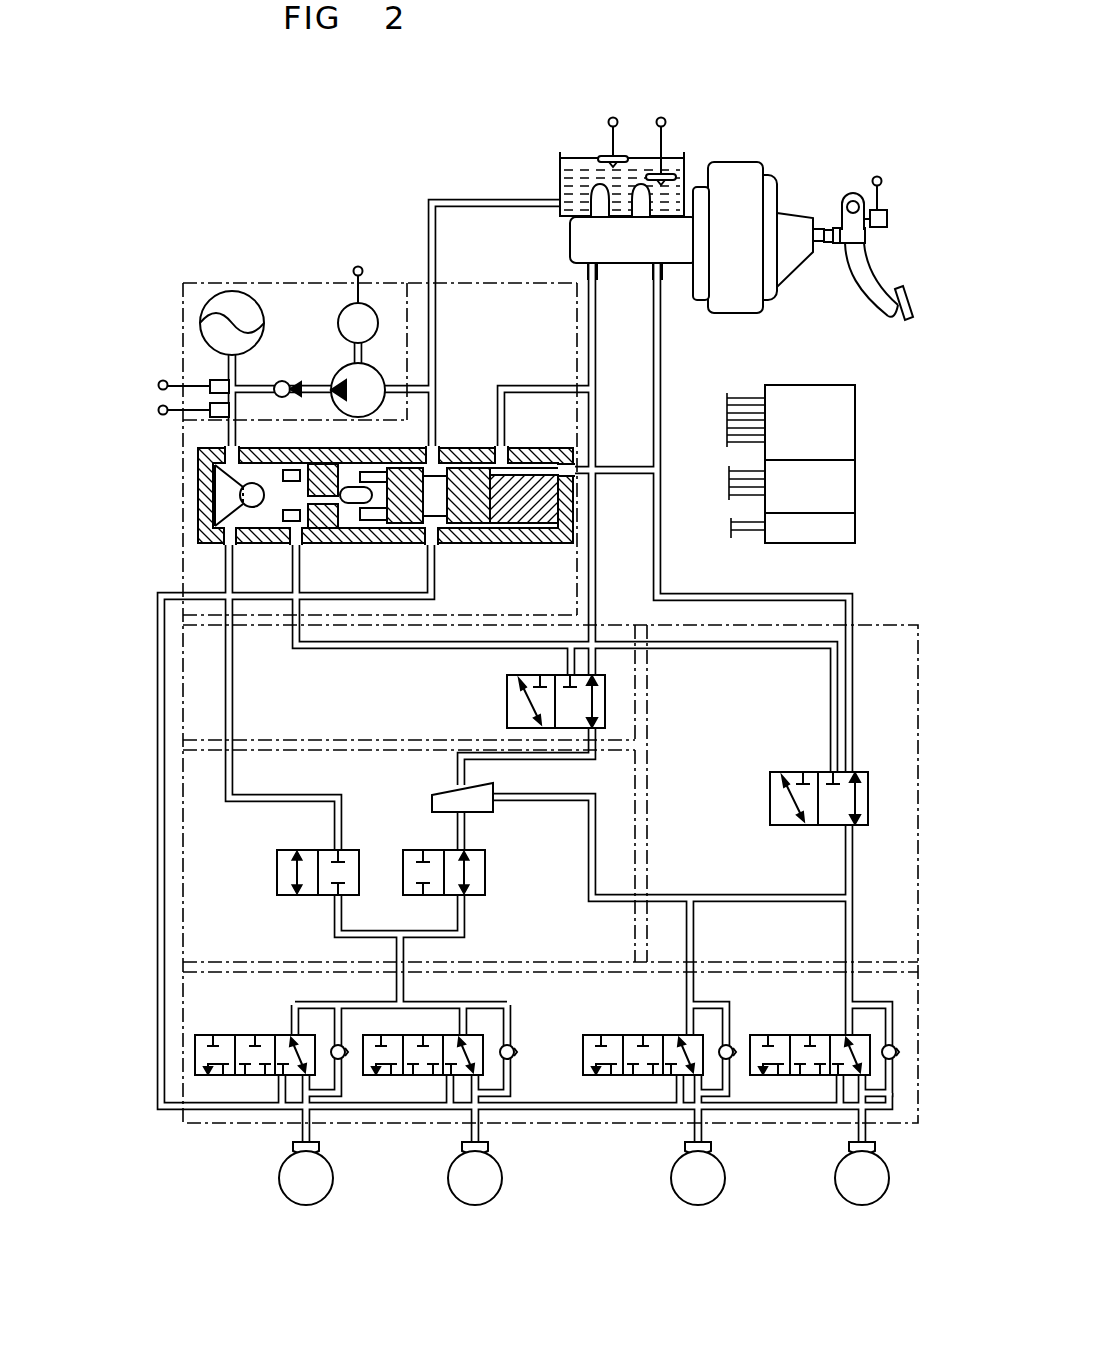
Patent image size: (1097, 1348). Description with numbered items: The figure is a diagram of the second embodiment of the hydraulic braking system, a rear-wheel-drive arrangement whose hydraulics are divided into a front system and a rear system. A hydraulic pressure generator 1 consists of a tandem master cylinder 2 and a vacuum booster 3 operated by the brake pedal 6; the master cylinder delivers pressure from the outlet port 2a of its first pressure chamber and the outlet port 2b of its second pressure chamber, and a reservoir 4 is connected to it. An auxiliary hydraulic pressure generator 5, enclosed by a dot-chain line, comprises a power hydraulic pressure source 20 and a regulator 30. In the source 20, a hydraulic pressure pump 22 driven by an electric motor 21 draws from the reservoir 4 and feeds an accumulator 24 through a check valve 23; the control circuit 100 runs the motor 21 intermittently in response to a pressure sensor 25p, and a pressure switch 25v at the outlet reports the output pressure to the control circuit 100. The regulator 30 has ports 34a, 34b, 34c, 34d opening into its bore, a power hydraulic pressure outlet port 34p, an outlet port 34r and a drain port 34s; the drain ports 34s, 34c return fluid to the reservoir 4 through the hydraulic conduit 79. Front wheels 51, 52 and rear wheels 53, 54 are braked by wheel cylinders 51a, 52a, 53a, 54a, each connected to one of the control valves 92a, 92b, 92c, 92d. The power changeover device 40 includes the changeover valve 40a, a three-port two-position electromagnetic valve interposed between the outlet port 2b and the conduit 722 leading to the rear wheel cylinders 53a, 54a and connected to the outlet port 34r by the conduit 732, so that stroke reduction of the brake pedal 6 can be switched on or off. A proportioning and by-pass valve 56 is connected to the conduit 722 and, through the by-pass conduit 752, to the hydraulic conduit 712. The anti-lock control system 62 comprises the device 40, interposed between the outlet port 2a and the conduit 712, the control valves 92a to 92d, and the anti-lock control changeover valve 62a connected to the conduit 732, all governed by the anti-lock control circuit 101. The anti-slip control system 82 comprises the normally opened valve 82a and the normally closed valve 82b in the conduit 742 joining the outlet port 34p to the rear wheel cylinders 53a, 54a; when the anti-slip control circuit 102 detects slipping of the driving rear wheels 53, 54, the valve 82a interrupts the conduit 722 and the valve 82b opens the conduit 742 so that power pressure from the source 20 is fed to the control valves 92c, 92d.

The hydraulic pressure generator 1 is at (780, 292).
The tandem master cylinder 2 is at (690, 268).
The outlet port of the first pressure chamber 2a is at (662, 268).
The outlet port of the second pressure chamber 2b is at (598, 268).
The vacuum booster 3 is at (738, 298).
The reservoir 4 is at (558, 174).
The auxiliary hydraulic pressure generator 5 is at (476, 283).
The brake pedal 6 is at (880, 306).
The power hydraulic pressure source 20 is at (298, 283).
The electric motor 21 is at (338, 314).
The hydraulic pressure pump 22 is at (338, 388).
The check valve 23 is at (282, 381).
The accumulator 24 is at (265, 323).
The pressure sensor 25p is at (195, 377).
The pressure switch 25v is at (195, 410).
The regulator 30 is at (200, 490).
The port 34a is at (575, 447).
The port 34b is at (500, 447).
The drain port 34c is at (428, 447).
The port 34d is at (240, 447).
The power hydraulic pressure outlet port 34p is at (236, 545).
The outlet port 34r is at (303, 545).
The drain port 34s is at (440, 545).
The power changeover device 40 is at (637, 720).
The changeover valve 40a is at (507, 701).
The proportioning and by-pass valve 56 is at (432, 799).
The anti-lock control system 62 is at (916, 624).
The anti-lock control changeover valve 62a is at (770, 798).
The hydraulic conduit 79 is at (157, 883).
The anti-slip control system 82 is at (182, 802).
The normally opened valve 82a is at (486, 870).
The normally closed valve 82b is at (277, 882).
The control valve 92a is at (782, 1034).
The control valve 92b is at (608, 1034).
The control valve 92c is at (440, 1034).
The control valve 92d is at (226, 1034).
The front wheel 51 is at (888, 1171).
The front wheel 52 is at (724, 1171).
The rear wheel 53 is at (500, 1171).
The rear wheel 54 is at (330, 1167).
The wheel cylinder 51a is at (880, 1148).
The wheel cylinder 52a is at (718, 1148).
The wheel cylinder 53a is at (492, 1146).
The wheel cylinder 54a is at (318, 1146).
The control circuit 100 is at (855, 412).
The anti-lock control circuit 101 is at (855, 474).
The anti-slip control circuit 102 is at (855, 531).
The hydraulic conduit 712 is at (661, 565).
The hydraulic conduit 722 is at (596, 545).
The hydraulic conduit 732 is at (375, 650).
The hydraulic conduit 742 is at (234, 711).
The by-pass hydraulic conduit 752 is at (590, 889).